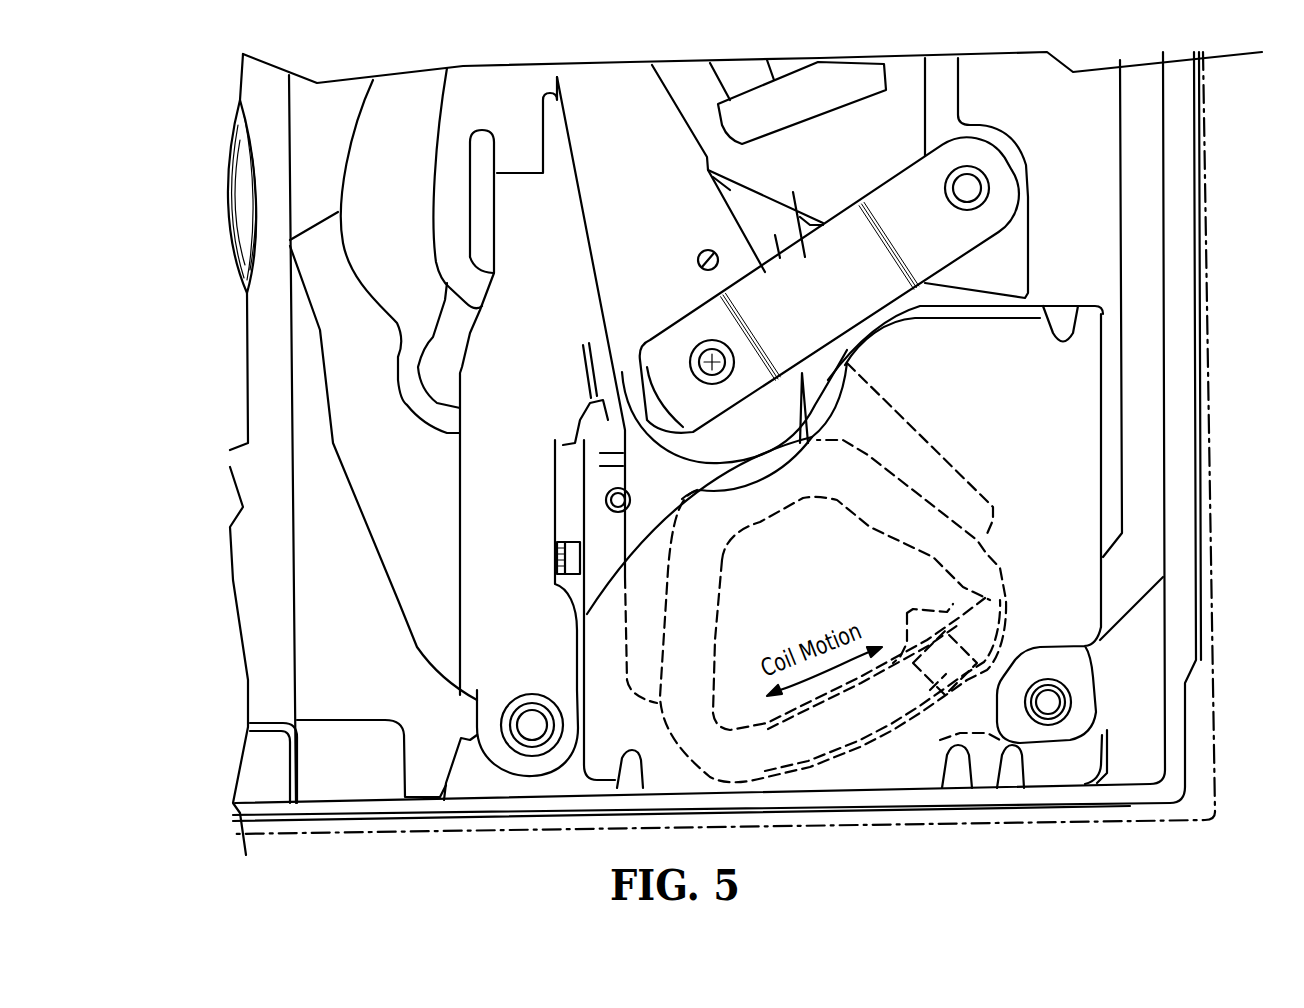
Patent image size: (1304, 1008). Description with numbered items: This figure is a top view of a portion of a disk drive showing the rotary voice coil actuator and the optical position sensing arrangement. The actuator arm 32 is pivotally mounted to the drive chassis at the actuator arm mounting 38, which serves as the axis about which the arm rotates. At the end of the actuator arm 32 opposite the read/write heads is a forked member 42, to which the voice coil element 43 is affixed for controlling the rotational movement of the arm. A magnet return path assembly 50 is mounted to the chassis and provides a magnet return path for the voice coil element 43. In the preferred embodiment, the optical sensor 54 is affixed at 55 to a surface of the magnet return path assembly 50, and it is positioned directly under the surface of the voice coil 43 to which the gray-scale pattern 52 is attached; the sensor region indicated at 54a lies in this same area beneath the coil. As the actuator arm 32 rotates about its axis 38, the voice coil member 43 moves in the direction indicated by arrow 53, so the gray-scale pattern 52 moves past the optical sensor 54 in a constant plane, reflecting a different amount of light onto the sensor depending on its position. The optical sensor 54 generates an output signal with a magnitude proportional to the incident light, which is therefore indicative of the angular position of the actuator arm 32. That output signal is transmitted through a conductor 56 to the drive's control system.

The actuator arm 32 is at (707, 140).
The actuator arm mounting 38 is at (694, 357).
The forked member 42 is at (652, 484).
The voice coil element 43 is at (722, 610).
The magnet return path assembly 50 is at (560, 778).
The gray-scale pattern 52 is at (980, 552).
The arrow 53 is at (830, 680).
The optical sensor 54 is at (970, 637).
The stop surface 54a is at (933, 682).
The sensor attachment location 55 is at (1048, 718).
The conductor 56 is at (1143, 610).